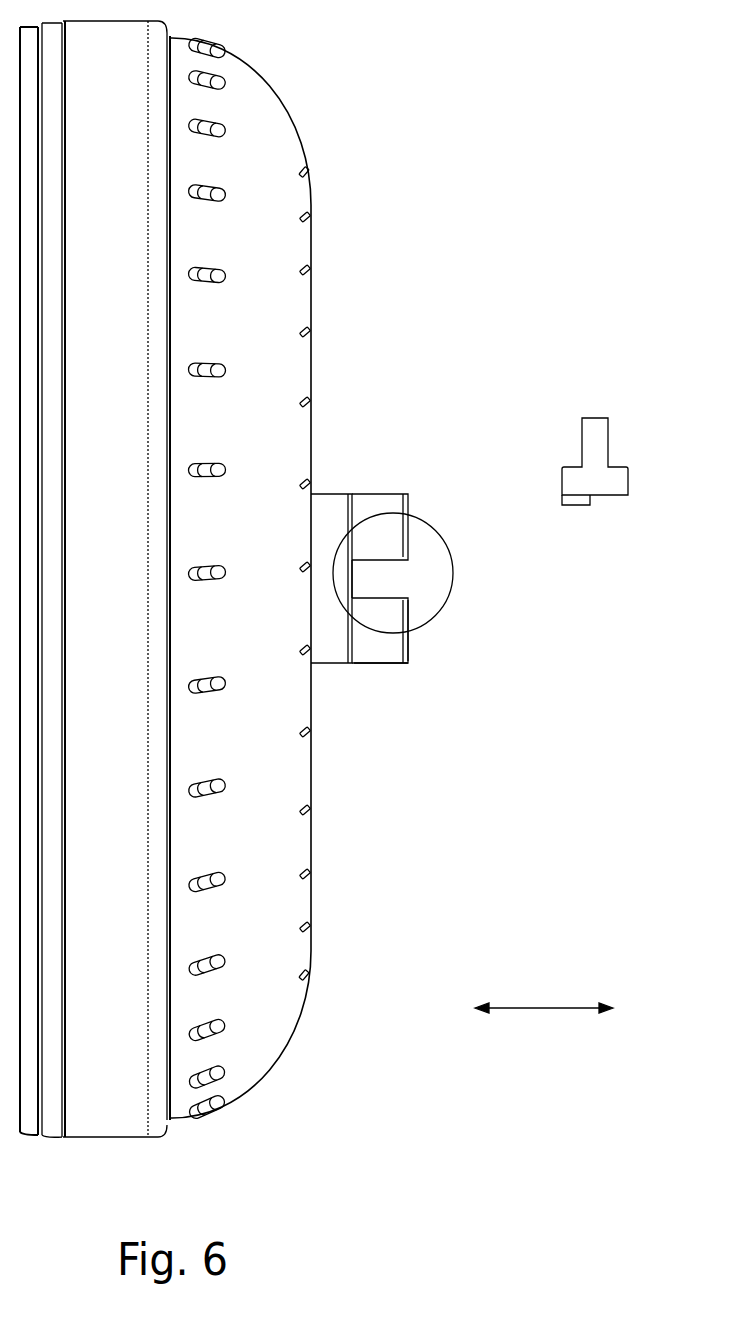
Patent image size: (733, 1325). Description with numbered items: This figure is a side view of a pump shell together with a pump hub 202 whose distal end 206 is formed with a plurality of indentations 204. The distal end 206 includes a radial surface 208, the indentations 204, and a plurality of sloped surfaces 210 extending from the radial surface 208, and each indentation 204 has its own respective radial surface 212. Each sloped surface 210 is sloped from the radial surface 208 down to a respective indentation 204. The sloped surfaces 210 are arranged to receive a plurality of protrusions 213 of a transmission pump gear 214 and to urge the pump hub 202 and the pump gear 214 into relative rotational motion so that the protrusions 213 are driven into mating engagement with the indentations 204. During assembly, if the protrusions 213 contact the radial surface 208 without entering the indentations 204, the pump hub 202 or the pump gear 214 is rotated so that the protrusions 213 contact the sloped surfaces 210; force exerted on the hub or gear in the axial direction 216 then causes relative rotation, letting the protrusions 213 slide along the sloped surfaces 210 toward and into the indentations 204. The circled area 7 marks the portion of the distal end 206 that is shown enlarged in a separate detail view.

The area 7 is at (443, 605).
The pump hub 202 is at (327, 493).
The indentations 204 is at (408, 598).
The distal end 206 is at (408, 665).
The radial surface 208 is at (412, 642).
The sloped surfaces 210 is at (385, 582).
The radial surface 212 is at (350, 577).
The protrusions 213 is at (575, 505).
The transmission pump gear 214 is at (598, 418).
The axial direction 216 is at (532, 1010).